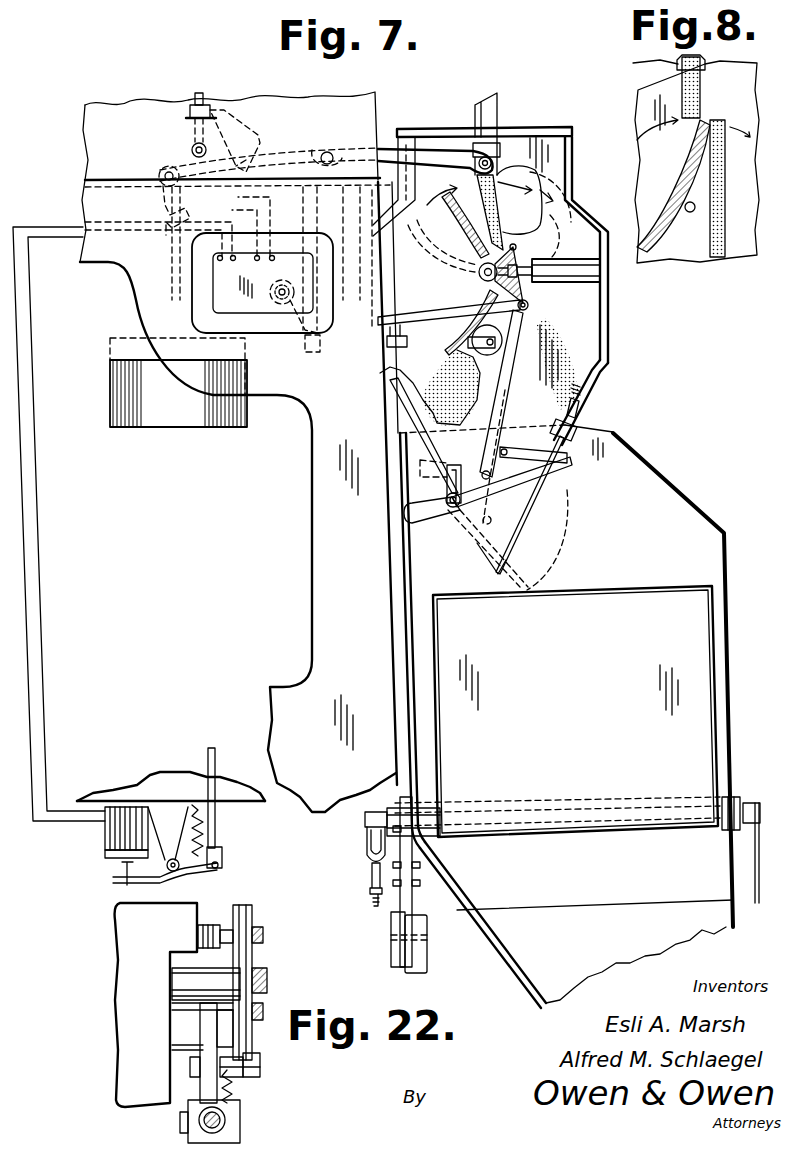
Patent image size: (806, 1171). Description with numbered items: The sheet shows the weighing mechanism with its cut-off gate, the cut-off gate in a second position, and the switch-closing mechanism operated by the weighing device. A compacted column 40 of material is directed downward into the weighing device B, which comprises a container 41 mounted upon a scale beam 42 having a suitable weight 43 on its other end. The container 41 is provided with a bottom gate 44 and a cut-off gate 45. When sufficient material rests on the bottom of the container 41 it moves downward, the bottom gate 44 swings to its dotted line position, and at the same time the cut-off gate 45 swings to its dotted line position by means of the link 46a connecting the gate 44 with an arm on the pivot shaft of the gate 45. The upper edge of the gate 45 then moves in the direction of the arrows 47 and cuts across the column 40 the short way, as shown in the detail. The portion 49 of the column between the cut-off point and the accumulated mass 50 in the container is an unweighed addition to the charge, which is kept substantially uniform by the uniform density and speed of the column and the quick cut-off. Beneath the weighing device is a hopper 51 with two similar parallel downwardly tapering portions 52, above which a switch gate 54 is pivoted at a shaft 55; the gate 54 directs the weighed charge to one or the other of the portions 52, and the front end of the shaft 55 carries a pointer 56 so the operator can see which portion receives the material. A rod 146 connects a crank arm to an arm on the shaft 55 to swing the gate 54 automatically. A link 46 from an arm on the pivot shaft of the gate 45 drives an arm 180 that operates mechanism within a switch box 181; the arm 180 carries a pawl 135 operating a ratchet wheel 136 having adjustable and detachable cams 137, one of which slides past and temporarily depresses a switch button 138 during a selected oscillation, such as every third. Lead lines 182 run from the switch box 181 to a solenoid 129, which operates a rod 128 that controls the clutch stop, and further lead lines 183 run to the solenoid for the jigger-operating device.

In FIG. 7, the compacted column 40 is at (498, 208).
In FIG. 8, the compacted column 40 is at (701, 95).
In FIG. 7, the container 41 is at (606, 372).
In FIG. 7, the scale beam 42 is at (382, 150).
In FIG. 7, the weight 43 is at (172, 412).
In FIG. 7, the bottom gate 44 is at (566, 477).
In FIG. 7, the cut-off gate 45 is at (455, 204).
In FIG. 8, the cut-off gate 45 is at (690, 135).
In FIG. 7, the link 46 is at (428, 313).
In FIG. 7, the link 46a is at (503, 379).
In FIG. 7, the arrows 47 is at (543, 197).
In FIG. 8, the portion of the column 49 is at (725, 176).
In FIG. 7, the accumulated mass 50 is at (547, 337).
In FIG. 7, the hopper 51 is at (730, 657).
In FIG. 7, the downwardly tapering portions 52 is at (497, 952).
In FIG. 7, the switch gate 54 is at (634, 603).
In FIG. 7, the pivot shaft 55 is at (363, 822).
In FIG. 7, the pointer 56 is at (750, 875).
In FIG. 7, the weighing device B is at (608, 326).
In FIG. 7, the rod 128 is at (216, 761).
In FIG. 7, the solenoid 129 is at (113, 840).
In FIG. 22, the pawl 135 is at (261, 1065).
In FIG. 22, the ratchet wheel 136 is at (265, 992).
In FIG. 22, the cams 137 is at (234, 930).
In FIG. 22, the switch button 138 is at (210, 925).
In FIG. 7, the rod 146 is at (371, 905).
In FIG. 7, the arm 180 is at (297, 310).
In FIG. 22, the arm 180 is at (210, 1082).
In FIG. 7, the switch box 181 is at (228, 322).
In FIG. 22, the switch box 181 is at (140, 1058).
In FIG. 7, the lead lines 182 is at (38, 622).
In FIG. 7, the lead lines 183 is at (262, 232).